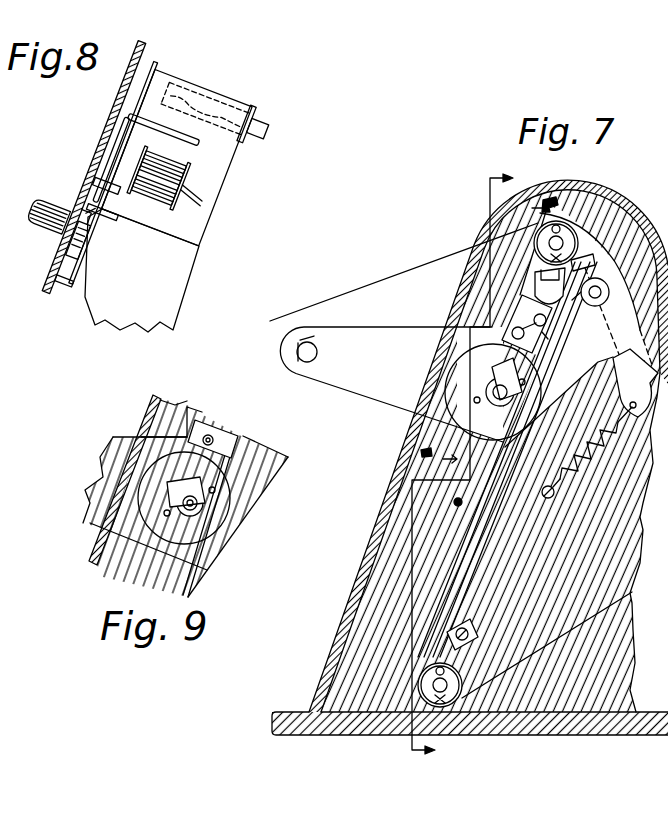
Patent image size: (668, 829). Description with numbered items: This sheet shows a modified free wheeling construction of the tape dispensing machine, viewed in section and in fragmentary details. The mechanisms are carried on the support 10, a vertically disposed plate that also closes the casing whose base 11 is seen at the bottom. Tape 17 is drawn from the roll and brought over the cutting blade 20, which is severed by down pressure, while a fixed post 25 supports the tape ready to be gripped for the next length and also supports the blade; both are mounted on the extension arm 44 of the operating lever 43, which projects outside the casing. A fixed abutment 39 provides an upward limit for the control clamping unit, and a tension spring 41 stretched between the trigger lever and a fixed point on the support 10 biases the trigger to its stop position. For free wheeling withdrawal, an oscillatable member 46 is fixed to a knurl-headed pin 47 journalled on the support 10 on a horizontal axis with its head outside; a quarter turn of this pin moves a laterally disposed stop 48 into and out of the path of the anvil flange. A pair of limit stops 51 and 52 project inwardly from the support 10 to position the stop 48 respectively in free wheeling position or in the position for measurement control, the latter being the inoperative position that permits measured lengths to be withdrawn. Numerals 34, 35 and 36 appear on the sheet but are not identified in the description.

In FIG. 7, the support 10 is at (450, 464).
In FIG. 7, the base 11 is at (546, 722).
In FIG. 7, the tape 17 is at (360, 283).
In FIG. 7, the cutting blade 20 is at (284, 352).
In FIG. 7, the fixed post 25 is at (316, 340).
In FIG. 7, the stop pin 34 is at (456, 507).
In FIG. 9, the element 35 is at (12, 443).
In FIG. 9, the element 36 is at (10, 389).
In FIG. 7, the fixed abutment 39 is at (612, 200).
In FIG. 8, the fixed abutment 39 is at (229, 141).
In FIG. 7, the tension spring 41 is at (602, 462).
In FIG. 7, the operating lever 43 is at (589, 318).
In FIG. 7, the extension arm 44 is at (391, 384).
In FIG. 7, the oscillatable member 46 is at (503, 402).
In FIG. 8, the oscillatable member 46 is at (100, 237).
In FIG. 9, the oscillatable member 46 is at (205, 496).
In FIG. 7, the knurl-headed pin 47 is at (464, 426).
In FIG. 8, the knurl-headed pin 47 is at (52, 206).
In FIG. 9, the knurl-headed pin 47 is at (188, 513).
In FIG. 8, the stop 48 is at (112, 218).
In FIG. 9, the stop 48 is at (180, 497).
In FIG. 7, the limit stop 51 is at (474, 401).
In FIG. 8, the limit stop 51 is at (70, 255).
In FIG. 9, the limit stop 51 is at (165, 515).
In FIG. 7, the limit stop 52 is at (526, 384).
In FIG. 8, the limit stop 52 is at (92, 200).
In FIG. 9, the limit stop 52 is at (217, 490).